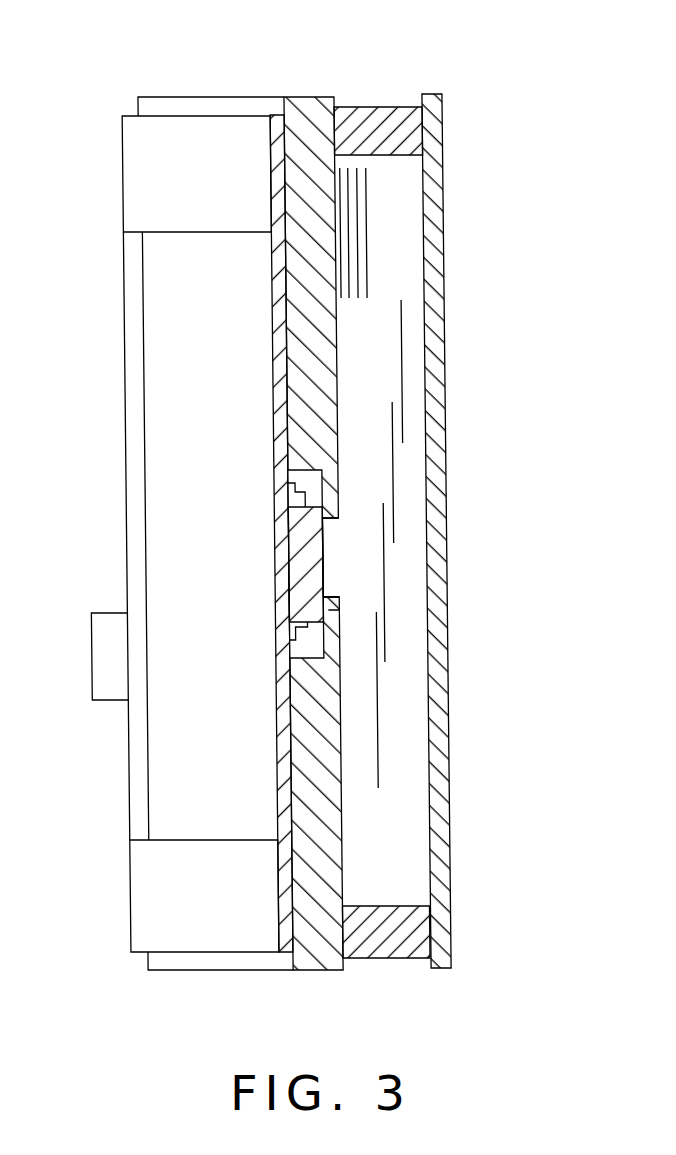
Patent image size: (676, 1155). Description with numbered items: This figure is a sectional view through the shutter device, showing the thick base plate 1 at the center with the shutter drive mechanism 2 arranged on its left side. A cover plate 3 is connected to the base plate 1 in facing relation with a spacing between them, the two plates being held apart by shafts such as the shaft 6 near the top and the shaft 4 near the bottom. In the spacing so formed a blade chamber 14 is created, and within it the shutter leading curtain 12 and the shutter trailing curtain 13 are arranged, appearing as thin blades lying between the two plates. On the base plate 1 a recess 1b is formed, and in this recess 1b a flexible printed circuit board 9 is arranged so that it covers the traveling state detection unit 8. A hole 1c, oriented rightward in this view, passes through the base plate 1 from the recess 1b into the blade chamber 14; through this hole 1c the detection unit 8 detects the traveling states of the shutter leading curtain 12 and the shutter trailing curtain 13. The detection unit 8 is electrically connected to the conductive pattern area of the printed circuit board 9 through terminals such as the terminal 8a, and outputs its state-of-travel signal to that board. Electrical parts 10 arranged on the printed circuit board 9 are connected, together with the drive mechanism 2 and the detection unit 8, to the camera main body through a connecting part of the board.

The base plate 1 is at (313, 103).
The recess 1b is at (284, 471).
The hole 1c is at (329, 563).
The shutter drive mechanism 2 is at (193, 100).
The cover plate 3 is at (427, 294).
The shaft 4 is at (388, 930).
The shaft 6 is at (387, 112).
The traveling state detection unit 8 is at (294, 573).
The terminal 8a is at (322, 595).
The flexible printed circuit board 9 is at (122, 178).
The electrical parts 10 is at (86, 676).
The shutter leading curtain 12 is at (389, 459).
The shutter trailing curtain 13 is at (362, 211).
The blade chamber 14 is at (385, 835).